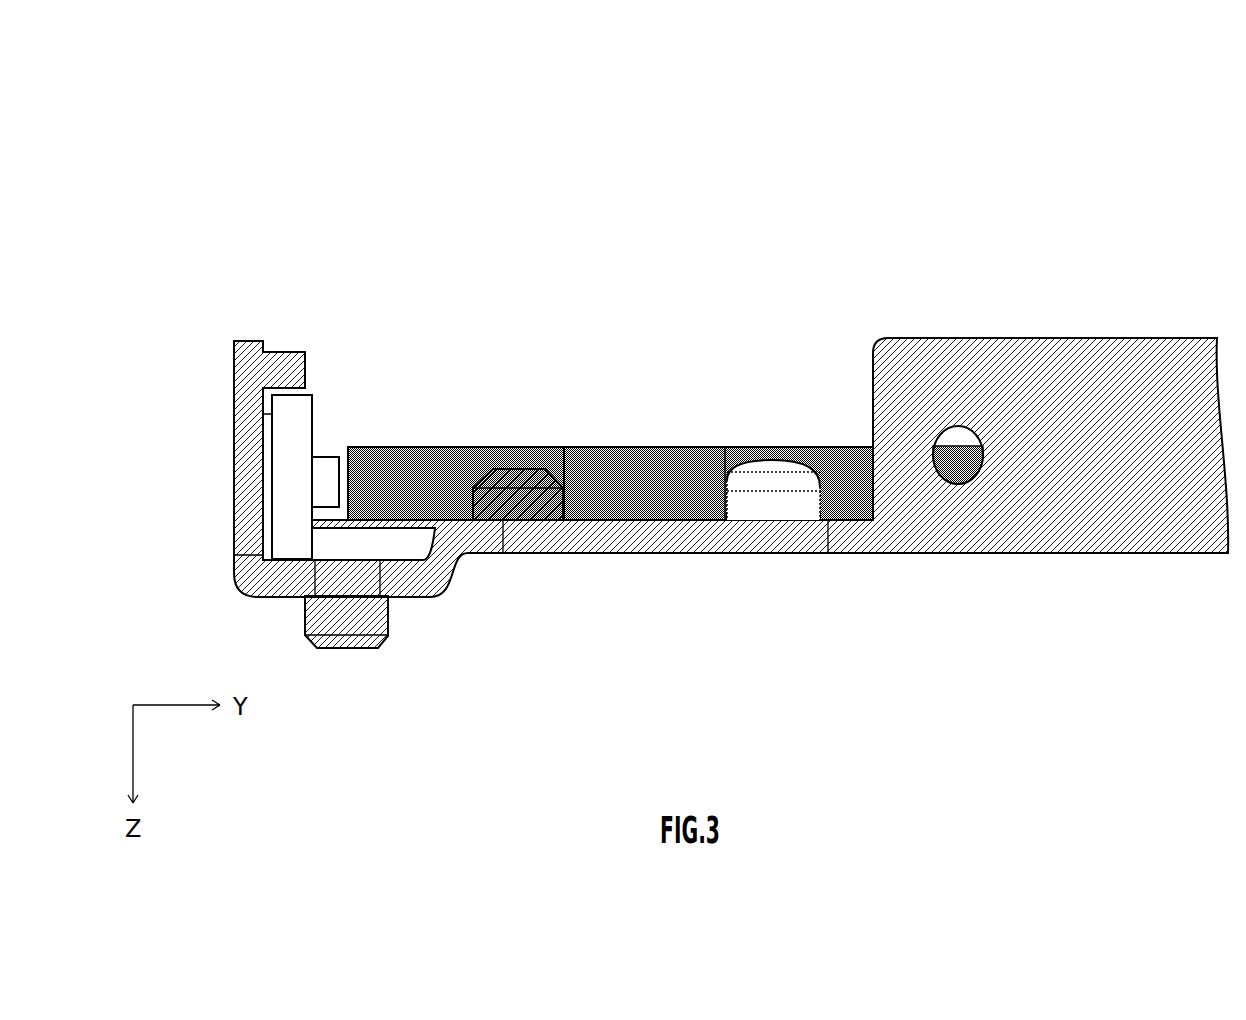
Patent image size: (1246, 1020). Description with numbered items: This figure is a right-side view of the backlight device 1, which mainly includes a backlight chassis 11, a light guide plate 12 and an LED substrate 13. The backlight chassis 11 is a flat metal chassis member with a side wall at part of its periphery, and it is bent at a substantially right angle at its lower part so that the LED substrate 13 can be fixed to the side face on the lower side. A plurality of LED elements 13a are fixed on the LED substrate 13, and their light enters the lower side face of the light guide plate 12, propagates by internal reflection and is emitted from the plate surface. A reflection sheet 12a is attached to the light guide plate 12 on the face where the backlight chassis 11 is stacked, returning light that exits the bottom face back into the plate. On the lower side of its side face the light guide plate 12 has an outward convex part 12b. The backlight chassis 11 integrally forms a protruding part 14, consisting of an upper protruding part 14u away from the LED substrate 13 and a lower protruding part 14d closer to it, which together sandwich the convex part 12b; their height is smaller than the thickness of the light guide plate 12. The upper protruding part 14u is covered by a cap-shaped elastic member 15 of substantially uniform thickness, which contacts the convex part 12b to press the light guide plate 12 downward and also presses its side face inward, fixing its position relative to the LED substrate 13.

The backlight device 1 is at (731, 393).
The backlight chassis 11 is at (615, 553).
The light guide plate 12 is at (468, 463).
The reflection sheet 12a is at (379, 530).
The convex part 12b is at (642, 463).
The LED substrate 13 is at (295, 428).
The LED elements 13a is at (325, 475).
The protruding part 14 is at (646, 343).
The protruding part 14d is at (523, 483).
The protruding part 14u is at (748, 512).
The elastic member 15 is at (800, 485).